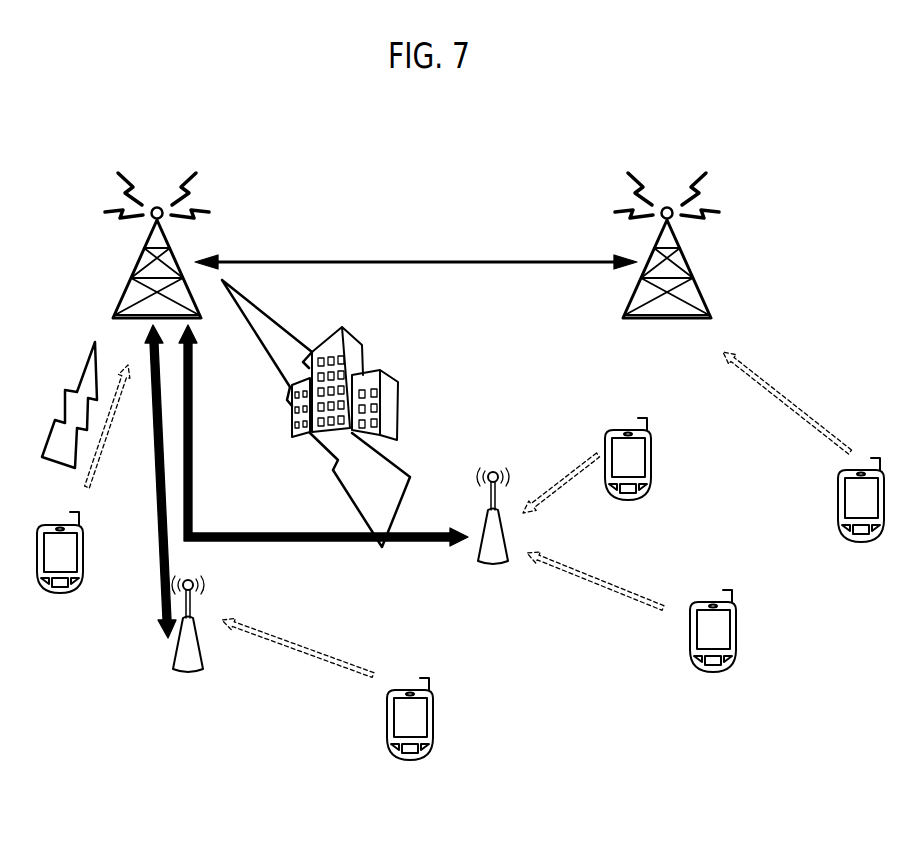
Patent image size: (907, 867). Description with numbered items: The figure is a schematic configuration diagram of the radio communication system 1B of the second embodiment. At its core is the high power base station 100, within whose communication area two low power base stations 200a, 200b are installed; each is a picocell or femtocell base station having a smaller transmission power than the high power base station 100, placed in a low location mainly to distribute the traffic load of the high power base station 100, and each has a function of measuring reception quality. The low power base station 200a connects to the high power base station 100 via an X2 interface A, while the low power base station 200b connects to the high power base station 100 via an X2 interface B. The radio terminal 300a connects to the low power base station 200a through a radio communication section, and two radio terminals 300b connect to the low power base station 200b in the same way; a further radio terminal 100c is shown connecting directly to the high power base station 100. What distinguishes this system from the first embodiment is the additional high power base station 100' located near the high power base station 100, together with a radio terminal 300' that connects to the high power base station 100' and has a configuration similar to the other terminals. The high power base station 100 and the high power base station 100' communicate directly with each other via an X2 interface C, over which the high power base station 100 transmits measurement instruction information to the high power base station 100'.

The radio communication system 1B is at (769, 107).
The high power base station 100 is at (170, 245).
The high power base station 100' is at (680, 245).
The mobile terminal communicating with base station 100c is at (58, 593).
The low power base station 200a is at (187, 672).
The low power base station 200b is at (493, 567).
The radio terminal 300a is at (410, 760).
The radio terminal 300b is at (628, 500).
The radio terminal 300' is at (861, 532).
The X2 interface A is at (162, 548).
The X2 interface B is at (305, 541).
The X2 interface C is at (423, 264).